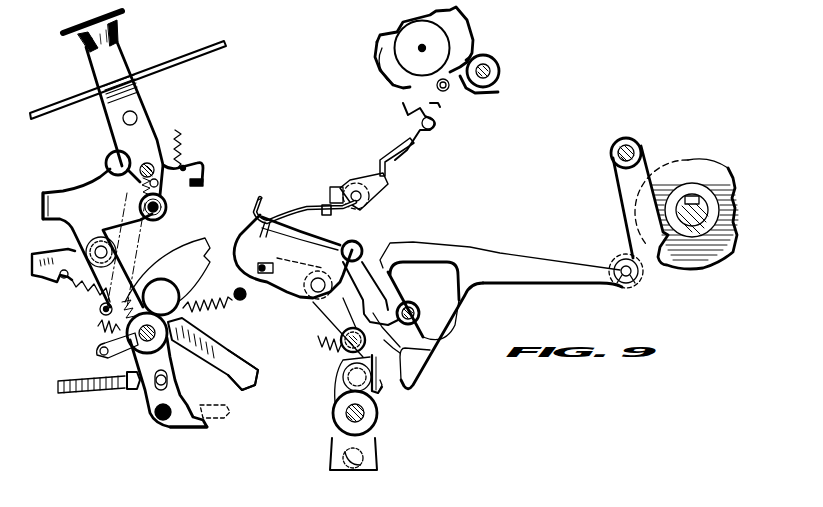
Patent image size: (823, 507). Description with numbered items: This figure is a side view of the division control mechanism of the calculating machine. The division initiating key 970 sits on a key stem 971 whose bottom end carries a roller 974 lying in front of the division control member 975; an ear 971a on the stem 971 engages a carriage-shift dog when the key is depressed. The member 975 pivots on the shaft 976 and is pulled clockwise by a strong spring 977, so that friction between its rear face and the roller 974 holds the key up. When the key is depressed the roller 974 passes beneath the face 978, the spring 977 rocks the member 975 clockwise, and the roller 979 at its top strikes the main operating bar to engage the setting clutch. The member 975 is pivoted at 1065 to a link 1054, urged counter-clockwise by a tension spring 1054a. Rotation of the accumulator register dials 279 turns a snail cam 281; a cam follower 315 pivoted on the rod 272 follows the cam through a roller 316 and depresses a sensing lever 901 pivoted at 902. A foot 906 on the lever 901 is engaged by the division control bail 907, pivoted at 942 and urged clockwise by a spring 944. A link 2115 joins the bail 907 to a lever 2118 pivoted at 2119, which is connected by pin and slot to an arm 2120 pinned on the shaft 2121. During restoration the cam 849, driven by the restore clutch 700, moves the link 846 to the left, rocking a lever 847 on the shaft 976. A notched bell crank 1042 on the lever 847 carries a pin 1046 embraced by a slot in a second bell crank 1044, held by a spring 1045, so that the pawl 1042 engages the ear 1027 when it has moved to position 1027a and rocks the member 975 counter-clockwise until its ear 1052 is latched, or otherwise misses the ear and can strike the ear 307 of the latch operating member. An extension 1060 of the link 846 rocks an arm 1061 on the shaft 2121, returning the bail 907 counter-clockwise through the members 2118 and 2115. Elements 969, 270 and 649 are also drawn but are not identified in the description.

The division initiating key 970 is at (121, 21).
The key stem 971 is at (128, 52).
The ear 971a is at (206, 182).
The spring 969 is at (182, 140).
The roller 979 is at (112, 165).
The division control member 975 is at (100, 214).
The ear 1052 is at (43, 195).
The roller 974 is at (167, 209).
The face 978 is at (137, 224).
The pivotal connection 1065 is at (117, 250).
The link 1054 is at (64, 252).
The tension spring 1054a is at (80, 288).
The spring 977 is at (98, 326).
The spring 1045 is at (232, 310).
The shaft 976 is at (162, 333).
The second bell crank 1044 is at (125, 366).
The lever 847 is at (170, 394).
The pin 1046 is at (147, 397).
The notched bell crank 1042 is at (205, 427).
The ear 307 is at (228, 358).
The ear 1027 is at (246, 383).
The ear position 1027a is at (230, 412).
The accumulator register dials 279 is at (472, 43).
The cam disc 270 is at (420, 50).
The snail cam 281 is at (408, 72).
The rod 272 is at (491, 72).
The cam follower 315 is at (490, 93).
The roller 316 is at (447, 92).
The sensing lever 901 is at (392, 165).
The pivot 902 is at (370, 196).
The division control bail 907 is at (304, 212).
The foot 906 is at (328, 216).
The pivot 942 is at (316, 300).
The spring 944 is at (319, 338).
The arm 1061 is at (345, 353).
The link 2115 is at (373, 276).
The link 846 is at (483, 251).
The extension 1060 is at (420, 386).
The lever 2118 is at (427, 347).
The pivot 2119 is at (380, 385).
The shaft 2121 is at (377, 420).
The arm 2120 is at (377, 462).
The cam 849 is at (697, 268).
The restore clutch 700 is at (690, 162).
The shaft 649 is at (684, 193).